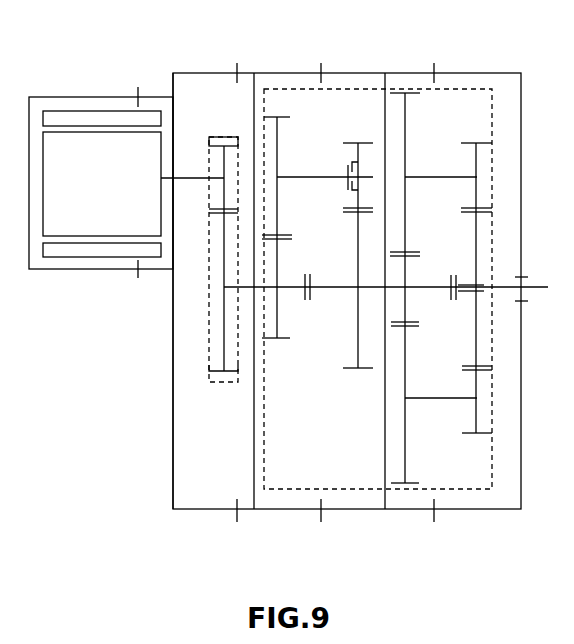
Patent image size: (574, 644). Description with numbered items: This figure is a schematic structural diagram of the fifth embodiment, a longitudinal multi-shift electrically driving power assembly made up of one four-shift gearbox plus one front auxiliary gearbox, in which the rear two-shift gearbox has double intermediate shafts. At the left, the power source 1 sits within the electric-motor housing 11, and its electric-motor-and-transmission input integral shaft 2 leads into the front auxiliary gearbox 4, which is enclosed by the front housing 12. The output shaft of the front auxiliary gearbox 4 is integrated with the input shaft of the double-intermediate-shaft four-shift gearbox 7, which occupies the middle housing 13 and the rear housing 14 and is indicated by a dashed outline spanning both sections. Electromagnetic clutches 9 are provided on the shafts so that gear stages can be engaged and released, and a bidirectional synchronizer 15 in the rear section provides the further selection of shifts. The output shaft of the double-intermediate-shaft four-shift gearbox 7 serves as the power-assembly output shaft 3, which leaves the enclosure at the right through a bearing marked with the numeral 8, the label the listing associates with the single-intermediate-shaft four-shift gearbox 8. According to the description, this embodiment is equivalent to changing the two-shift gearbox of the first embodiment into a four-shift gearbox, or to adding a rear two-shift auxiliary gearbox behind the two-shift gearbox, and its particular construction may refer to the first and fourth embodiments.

The power source 1 is at (118, 154).
The electric-motor-and-transmission input integral shaft 2 is at (202, 180).
The power-assembly output shaft 3 is at (546, 287).
The front auxiliary gearbox 4 is at (228, 138).
The double-intermediate-shaft four-shift gearbox 7 is at (357, 87).
The single-intermediate-shaft four-shift gearbox 8 is at (521, 290).
The electromagnetic clutches 9 is at (350, 175).
The electric-motor housing 11 is at (125, 270).
The front housing 12 is at (213, 510).
The middle housing 13 is at (309, 510).
The rear housing 14 is at (477, 510).
The bidirectional synchronizer 15 is at (452, 300).